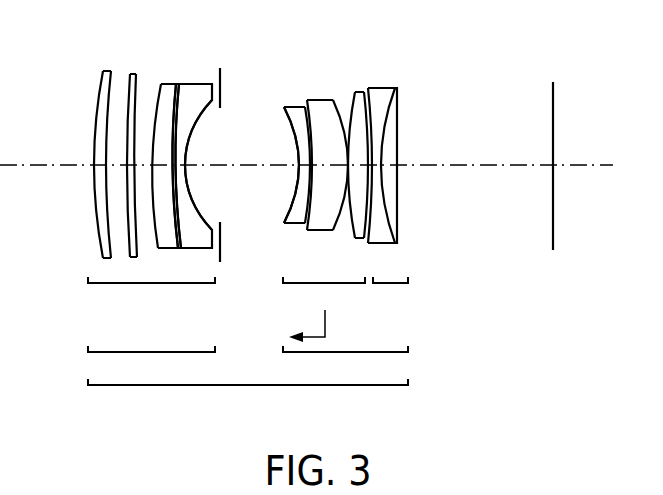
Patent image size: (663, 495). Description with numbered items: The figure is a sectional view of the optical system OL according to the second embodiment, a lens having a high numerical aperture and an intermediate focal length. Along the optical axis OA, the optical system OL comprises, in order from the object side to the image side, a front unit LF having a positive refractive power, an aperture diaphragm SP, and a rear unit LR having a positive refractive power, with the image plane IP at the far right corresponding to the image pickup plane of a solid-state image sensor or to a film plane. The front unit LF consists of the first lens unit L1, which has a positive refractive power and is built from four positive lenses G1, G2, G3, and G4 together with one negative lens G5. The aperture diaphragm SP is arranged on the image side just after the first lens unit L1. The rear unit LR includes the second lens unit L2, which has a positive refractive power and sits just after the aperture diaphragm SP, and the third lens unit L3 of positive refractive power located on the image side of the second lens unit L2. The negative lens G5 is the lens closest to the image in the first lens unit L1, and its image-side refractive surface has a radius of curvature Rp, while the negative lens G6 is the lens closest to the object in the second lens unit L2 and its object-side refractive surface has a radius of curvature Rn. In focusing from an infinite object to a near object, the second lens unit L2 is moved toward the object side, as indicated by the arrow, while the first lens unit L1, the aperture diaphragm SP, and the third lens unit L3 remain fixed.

The positive lens G1 is at (102, 72).
The positive lens G2 is at (128, 76).
The positive lens G3 is at (172, 90).
The positive lens G4 is at (176, 106).
The negative lens G5 is at (192, 92).
The negative lens G6 is at (293, 118).
The aperture diaphragm SP is at (221, 90).
The radius of curvature Rp is at (196, 130).
The radius of curvature Rn is at (293, 211).
The optical axis OA is at (454, 165).
The image plane IP is at (553, 127).
The first lens unit L1 is at (151, 293).
The second lens unit L2 is at (324, 309).
The third lens unit L3 is at (390, 293).
The front unit LF is at (151, 363).
The rear unit LR is at (345, 363).
The optical system OL is at (248, 400).